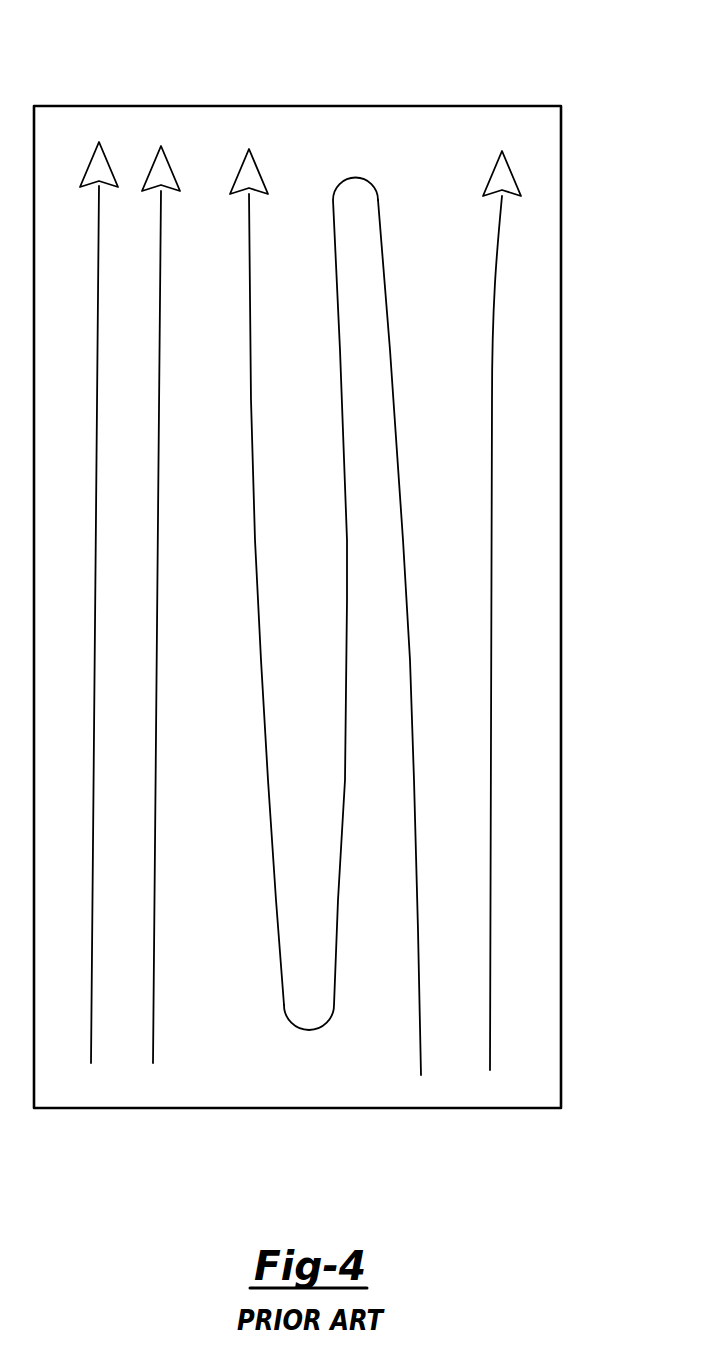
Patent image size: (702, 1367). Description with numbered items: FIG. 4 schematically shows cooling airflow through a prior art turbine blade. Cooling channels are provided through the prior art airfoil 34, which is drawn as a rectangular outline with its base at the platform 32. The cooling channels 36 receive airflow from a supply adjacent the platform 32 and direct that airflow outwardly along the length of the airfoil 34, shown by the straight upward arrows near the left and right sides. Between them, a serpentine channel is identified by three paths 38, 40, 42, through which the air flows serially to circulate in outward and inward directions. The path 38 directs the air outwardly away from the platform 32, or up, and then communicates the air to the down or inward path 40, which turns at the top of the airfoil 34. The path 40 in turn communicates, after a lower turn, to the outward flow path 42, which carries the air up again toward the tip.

The platform 32 is at (295, 1108).
The airfoil 34 is at (62, 135).
The cooling channels 36 is at (153, 1053).
The path 38 is at (416, 760).
The path 40 is at (348, 612).
The path 42 is at (259, 628).